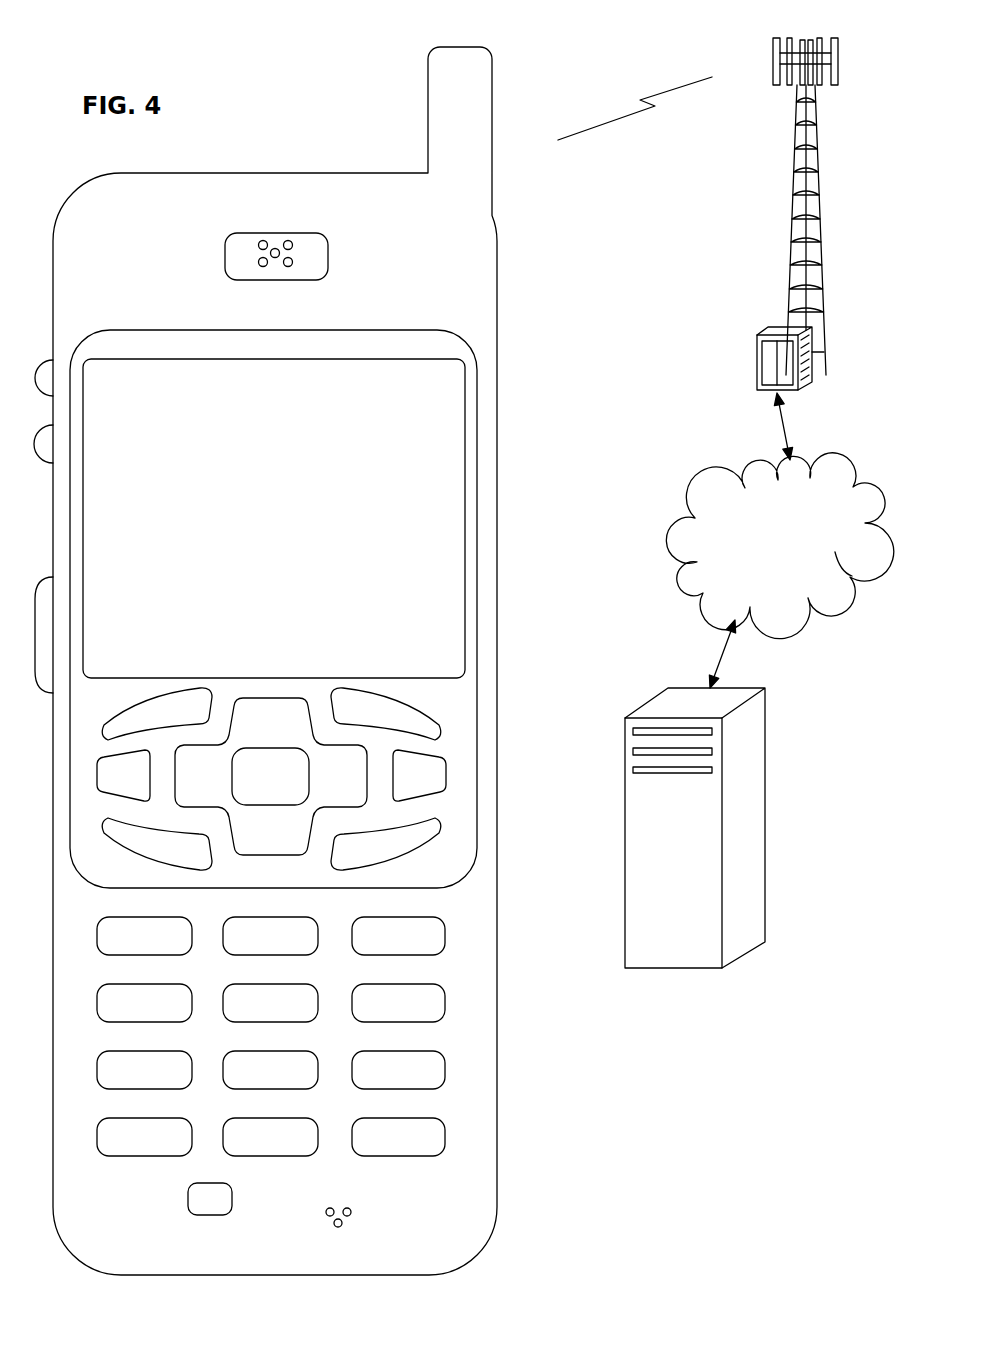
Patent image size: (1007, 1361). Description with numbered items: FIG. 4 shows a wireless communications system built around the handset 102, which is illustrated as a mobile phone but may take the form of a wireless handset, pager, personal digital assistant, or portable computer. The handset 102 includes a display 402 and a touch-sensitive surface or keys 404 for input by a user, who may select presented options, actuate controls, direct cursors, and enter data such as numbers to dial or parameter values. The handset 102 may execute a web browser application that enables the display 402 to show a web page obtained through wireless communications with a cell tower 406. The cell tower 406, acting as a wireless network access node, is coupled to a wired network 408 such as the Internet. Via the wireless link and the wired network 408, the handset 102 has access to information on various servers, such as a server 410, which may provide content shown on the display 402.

The handset 102 is at (304, 661).
The display 402 is at (465, 373).
The keys 404 is at (336, 927).
The cell tower 406 is at (788, 230).
The wired network 408 is at (695, 593).
The server 410 is at (670, 968).